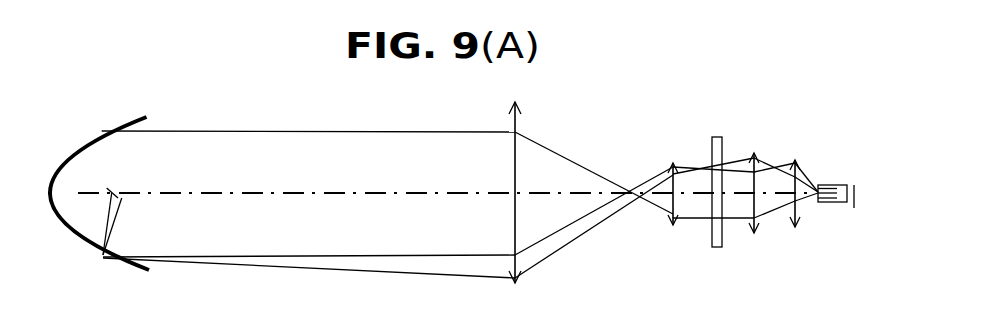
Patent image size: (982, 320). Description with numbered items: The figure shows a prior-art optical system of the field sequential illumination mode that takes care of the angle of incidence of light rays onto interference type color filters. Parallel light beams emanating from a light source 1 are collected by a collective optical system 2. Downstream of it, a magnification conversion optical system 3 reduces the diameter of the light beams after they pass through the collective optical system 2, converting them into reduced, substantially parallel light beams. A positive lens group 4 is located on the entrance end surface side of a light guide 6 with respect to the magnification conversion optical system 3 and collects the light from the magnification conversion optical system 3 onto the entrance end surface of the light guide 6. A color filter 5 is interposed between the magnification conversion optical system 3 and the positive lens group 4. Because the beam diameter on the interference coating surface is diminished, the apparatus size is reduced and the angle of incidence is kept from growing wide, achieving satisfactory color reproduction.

The light source 1 is at (112, 193).
The collective optical system 2 is at (506, 104).
The magnification conversion optical system 3 is at (673, 161).
The positive lens group 4 is at (805, 154).
The color filter 5 is at (717, 247).
The light guide 6 is at (833, 202).